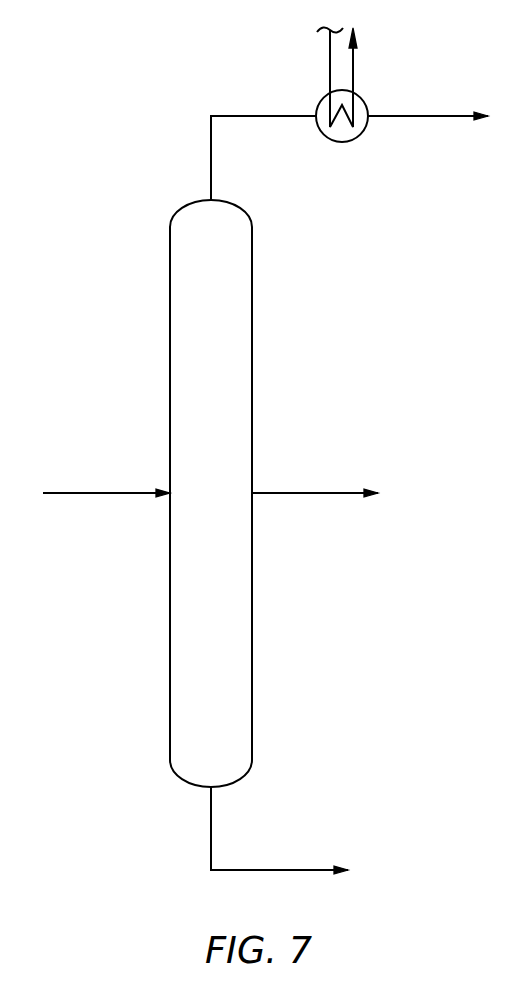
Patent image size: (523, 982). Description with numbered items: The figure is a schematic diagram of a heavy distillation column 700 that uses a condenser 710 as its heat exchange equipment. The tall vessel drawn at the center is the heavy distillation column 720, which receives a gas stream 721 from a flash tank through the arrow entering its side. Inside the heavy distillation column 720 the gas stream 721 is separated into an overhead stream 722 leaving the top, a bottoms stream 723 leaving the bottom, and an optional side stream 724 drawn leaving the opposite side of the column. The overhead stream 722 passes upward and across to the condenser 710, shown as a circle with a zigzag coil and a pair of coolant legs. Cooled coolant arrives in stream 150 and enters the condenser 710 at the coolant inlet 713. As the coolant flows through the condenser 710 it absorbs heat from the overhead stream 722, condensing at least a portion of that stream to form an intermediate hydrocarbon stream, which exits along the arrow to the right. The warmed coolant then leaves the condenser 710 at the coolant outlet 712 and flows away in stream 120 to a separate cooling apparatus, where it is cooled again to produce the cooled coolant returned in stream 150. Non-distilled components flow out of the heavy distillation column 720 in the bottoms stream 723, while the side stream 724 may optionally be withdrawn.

The heavy distillation column 700 is at (151, 73).
The condenser 710 is at (345, 141).
The coolant outlet 712 is at (353, 87).
The coolant inlet 713 is at (330, 90).
The stream 150 is at (330, 50).
The stream 120 is at (353, 57).
The heavy distillation column 720 is at (228, 504).
The gas stream 721 is at (102, 493).
The overhead stream 722 is at (211, 140).
The bottoms stream 723 is at (267, 870).
The side stream 724 is at (302, 493).